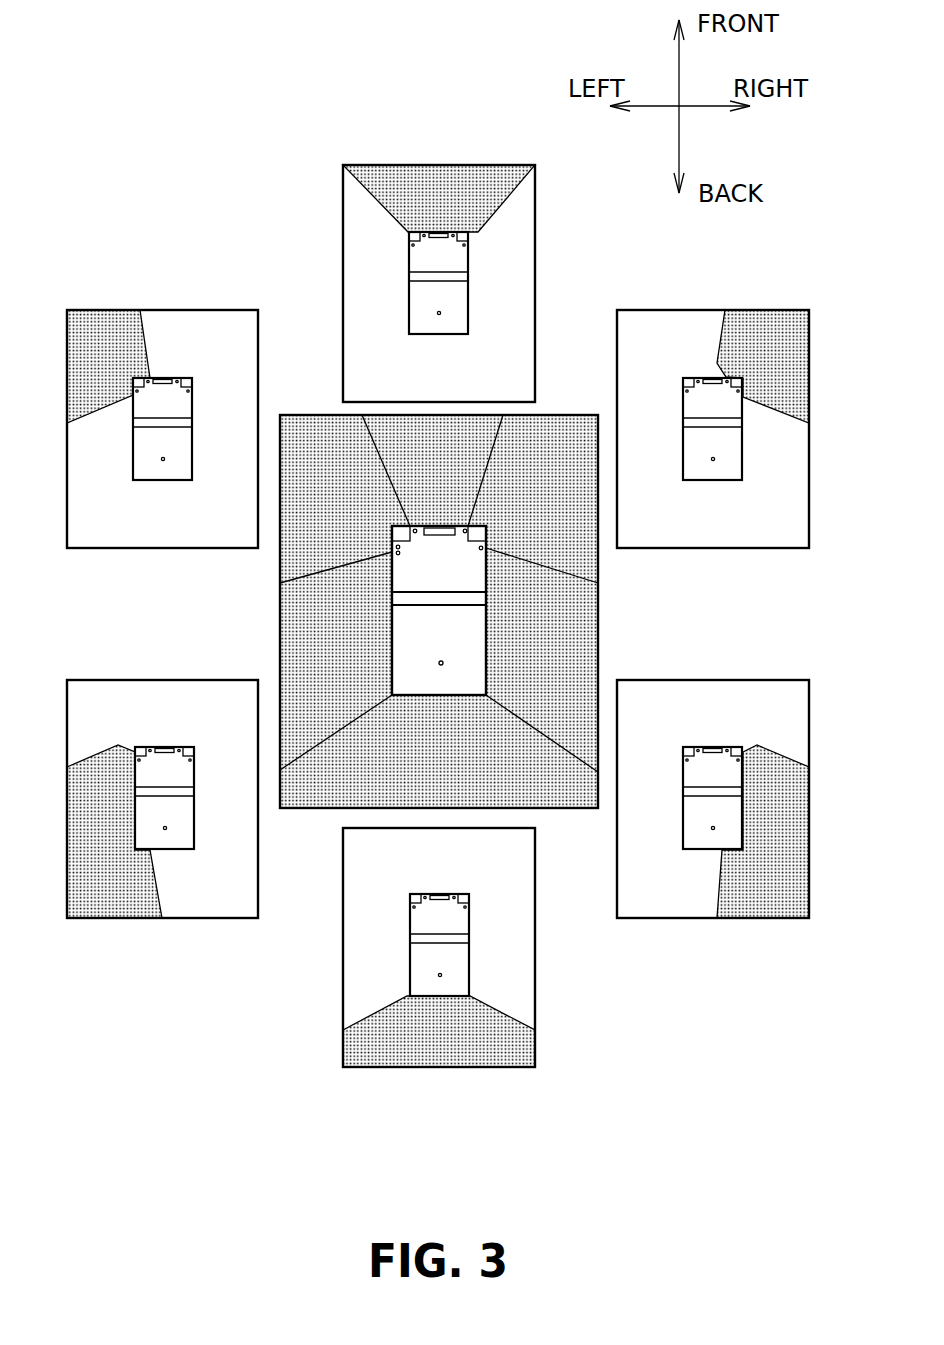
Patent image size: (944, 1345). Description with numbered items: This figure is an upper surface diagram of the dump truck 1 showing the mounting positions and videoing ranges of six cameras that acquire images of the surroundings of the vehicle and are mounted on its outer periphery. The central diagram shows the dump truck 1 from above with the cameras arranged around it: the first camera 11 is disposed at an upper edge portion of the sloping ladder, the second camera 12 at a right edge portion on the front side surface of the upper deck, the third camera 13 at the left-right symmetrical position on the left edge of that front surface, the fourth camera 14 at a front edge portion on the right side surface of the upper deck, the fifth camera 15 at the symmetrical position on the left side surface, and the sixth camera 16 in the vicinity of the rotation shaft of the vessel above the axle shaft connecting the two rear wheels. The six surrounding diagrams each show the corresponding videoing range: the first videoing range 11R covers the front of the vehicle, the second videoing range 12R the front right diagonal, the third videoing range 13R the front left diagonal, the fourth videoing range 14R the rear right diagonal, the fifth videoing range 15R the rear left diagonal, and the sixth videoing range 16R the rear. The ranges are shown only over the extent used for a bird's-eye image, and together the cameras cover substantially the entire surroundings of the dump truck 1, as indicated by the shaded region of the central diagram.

The dump truck 1 is at (449, 579).
The first camera 11 is at (420, 527).
The second camera 12 is at (487, 533).
The third camera 13 is at (392, 538).
The fourth camera 14 is at (487, 553).
The fifth camera 15 is at (392, 557).
The sixth camera 16 is at (442, 666).
The first videoing range 11R is at (442, 180).
The second videoing range 12R is at (767, 340).
The third videoing range 13R is at (100, 340).
The fourth videoing range 14R is at (768, 905).
The fifth videoing range 15R is at (113, 905).
The sixth videoing range 16R is at (442, 1053).